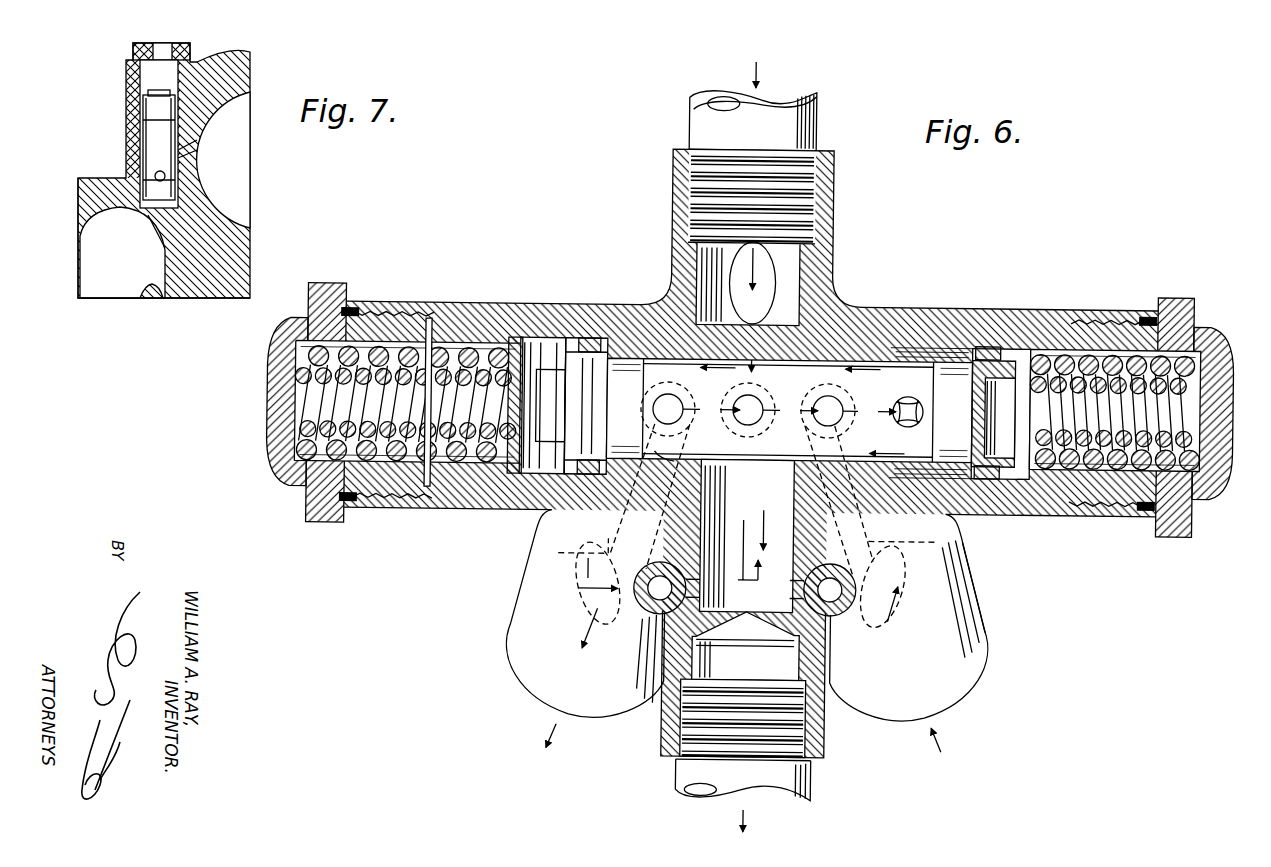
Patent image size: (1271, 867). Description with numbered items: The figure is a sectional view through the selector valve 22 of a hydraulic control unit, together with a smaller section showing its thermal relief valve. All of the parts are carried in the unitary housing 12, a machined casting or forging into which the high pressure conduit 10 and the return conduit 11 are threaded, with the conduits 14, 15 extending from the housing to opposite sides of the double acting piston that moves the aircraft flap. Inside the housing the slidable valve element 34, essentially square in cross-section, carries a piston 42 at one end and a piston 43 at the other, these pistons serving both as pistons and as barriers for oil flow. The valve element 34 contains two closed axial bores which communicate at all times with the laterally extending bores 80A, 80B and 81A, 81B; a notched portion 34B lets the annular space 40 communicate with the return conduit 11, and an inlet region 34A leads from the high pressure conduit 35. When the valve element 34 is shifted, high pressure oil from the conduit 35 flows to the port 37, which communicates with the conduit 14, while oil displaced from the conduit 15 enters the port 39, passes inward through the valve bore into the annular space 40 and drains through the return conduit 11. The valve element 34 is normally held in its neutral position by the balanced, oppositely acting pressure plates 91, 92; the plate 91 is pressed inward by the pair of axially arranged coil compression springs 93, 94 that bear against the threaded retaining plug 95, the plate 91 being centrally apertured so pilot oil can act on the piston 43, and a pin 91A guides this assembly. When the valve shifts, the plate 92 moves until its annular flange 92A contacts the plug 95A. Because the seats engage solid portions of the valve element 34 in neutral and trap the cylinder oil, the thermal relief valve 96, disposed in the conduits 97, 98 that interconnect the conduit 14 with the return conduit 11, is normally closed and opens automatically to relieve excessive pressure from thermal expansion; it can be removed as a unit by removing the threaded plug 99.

In FIG. 6, the high pressure conduit 10 is at (815, 126).
In FIG. 6, the return conduit 11 is at (816, 781).
In FIG. 7, the return conduit 11 is at (213, 216).
In FIG. 6, the unitary housing 12 is at (1080, 280).
In FIG. 6, the selector valve 22 is at (982, 302).
In FIG. 6, the high pressure conduit 35 is at (768, 272).
In FIG. 6, the valve element 34 is at (782, 396).
In FIG. 6, the inlet passage 34A is at (652, 308).
In FIG. 6, the notched portion 34B is at (708, 482).
In FIG. 6, the port 37 is at (556, 526).
In FIG. 6, the port 39 is at (935, 542).
In FIG. 6, the annular space 40 is at (944, 330).
In FIG. 6, the piston 42 is at (1008, 343).
In FIG. 6, the piston 43 is at (586, 338).
In FIG. 6, the laterally extending bore 80A is at (922, 414).
In FIG. 6, the laterally extending bore 80B is at (840, 404).
In FIG. 6, the laterally extending bore 81A is at (755, 424).
In FIG. 6, the laterally extending bore 81B is at (655, 406).
In FIG. 6, the pressure plate 91 is at (522, 338).
In FIG. 6, the guide pin 91A is at (466, 492).
In FIG. 6, the pressure plate 92 is at (1055, 490).
In FIG. 6, the annular flange 92A is at (1076, 490).
In FIG. 6, the coil compression spring 93 is at (300, 457).
In FIG. 6, the coil compression spring 94 is at (298, 437).
In FIG. 6, the threaded retaining plug 95 is at (328, 292).
In FIG. 6, the plug 95A is at (1183, 300).
In FIG. 6, the conduit 14 is at (535, 690).
In FIG. 7, the conduit 14 is at (140, 298).
In FIG. 6, the conduit 15 is at (960, 686).
In FIG. 7, the thermal relief valve 96 is at (148, 115).
In FIG. 7, the conduit 97 is at (158, 222).
In FIG. 7, the conduit 98 is at (198, 150).
In FIG. 7, the threaded plug 99 is at (132, 49).